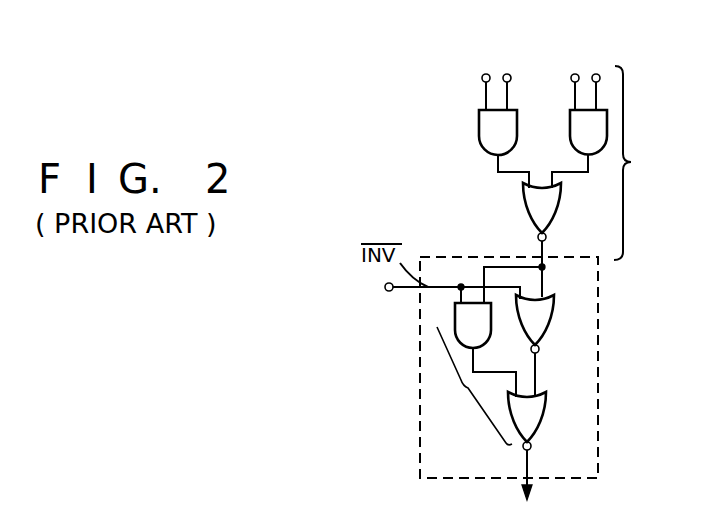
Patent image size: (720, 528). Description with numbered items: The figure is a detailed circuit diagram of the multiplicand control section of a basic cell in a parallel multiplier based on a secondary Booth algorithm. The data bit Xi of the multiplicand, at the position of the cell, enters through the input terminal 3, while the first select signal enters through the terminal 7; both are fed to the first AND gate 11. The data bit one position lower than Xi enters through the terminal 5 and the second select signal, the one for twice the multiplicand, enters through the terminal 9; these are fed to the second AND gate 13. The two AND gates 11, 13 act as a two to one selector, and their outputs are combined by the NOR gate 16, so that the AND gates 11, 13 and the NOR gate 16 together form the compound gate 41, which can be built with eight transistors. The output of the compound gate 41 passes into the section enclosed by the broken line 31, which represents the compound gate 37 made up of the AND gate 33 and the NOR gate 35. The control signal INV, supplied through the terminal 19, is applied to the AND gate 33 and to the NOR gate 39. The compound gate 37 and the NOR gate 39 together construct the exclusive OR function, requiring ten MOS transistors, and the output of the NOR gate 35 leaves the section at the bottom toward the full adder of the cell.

The input terminal 3 is at (483, 75).
The terminal 5 is at (596, 74).
The terminal 7 is at (507, 74).
The terminal 9 is at (574, 74).
The first AND gate 11 is at (479, 125).
The second AND gate 13 is at (570, 125).
The NOR gate 16 is at (523, 206).
The terminal 19 is at (386, 291).
The broken line 31 is at (474, 479).
The AND gate 33 is at (489, 340).
The NOR gate 35 is at (546, 418).
The compound gate 37 is at (464, 386).
The NOR gate 39 is at (552, 334).
The compound gate 41 is at (637, 163).